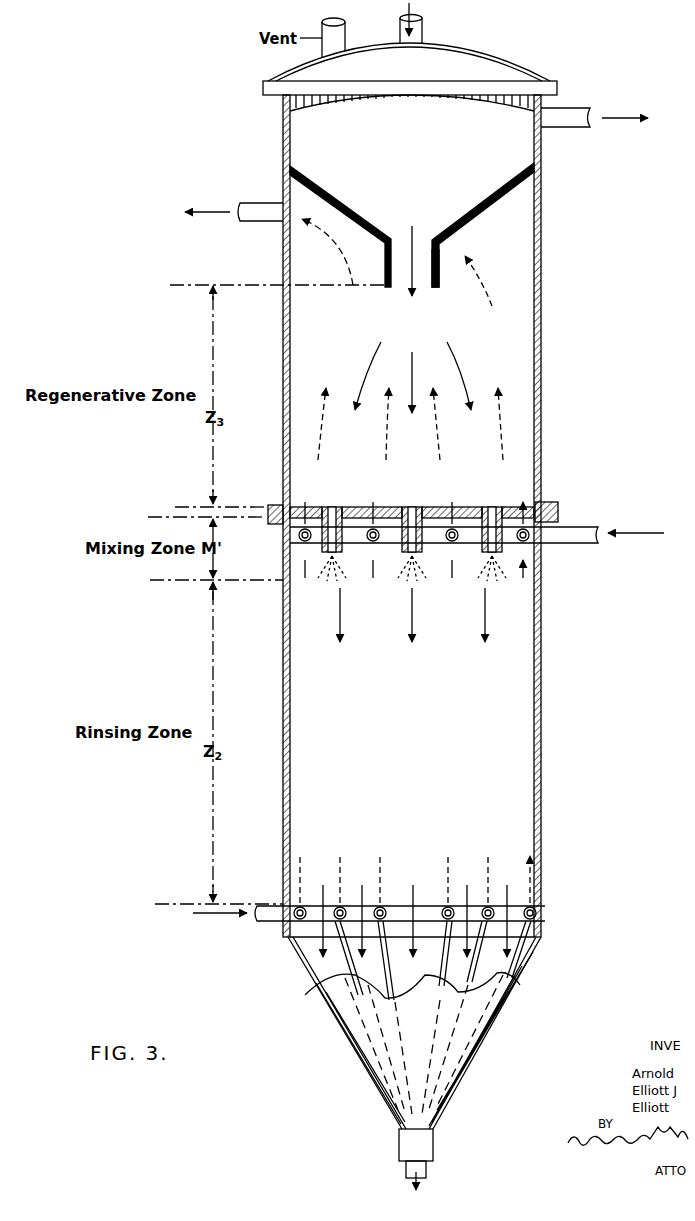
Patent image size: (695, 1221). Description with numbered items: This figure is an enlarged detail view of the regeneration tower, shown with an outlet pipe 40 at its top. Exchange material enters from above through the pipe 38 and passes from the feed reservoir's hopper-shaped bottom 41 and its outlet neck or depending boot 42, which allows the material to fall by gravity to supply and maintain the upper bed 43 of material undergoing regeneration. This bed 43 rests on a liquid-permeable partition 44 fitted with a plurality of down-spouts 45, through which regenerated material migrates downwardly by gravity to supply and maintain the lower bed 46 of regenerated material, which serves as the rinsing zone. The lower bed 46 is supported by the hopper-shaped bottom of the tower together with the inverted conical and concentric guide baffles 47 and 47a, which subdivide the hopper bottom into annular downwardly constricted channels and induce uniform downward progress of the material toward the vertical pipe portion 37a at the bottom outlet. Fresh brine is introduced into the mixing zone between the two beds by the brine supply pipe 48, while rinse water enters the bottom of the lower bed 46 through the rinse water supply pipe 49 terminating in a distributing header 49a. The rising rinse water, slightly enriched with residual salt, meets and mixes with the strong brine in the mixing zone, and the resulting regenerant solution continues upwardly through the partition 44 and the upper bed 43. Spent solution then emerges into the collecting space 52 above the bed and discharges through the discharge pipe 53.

The vertical portion of pipe 37a is at (430, 1166).
The pipe 38 is at (425, 33).
The outlet pipe 40 is at (565, 112).
The hopper-shaped bottom 41 is at (494, 203).
The outlet neck or depending boot 42 is at (440, 264).
The bed of exchange material for regeneration 43 is at (410, 394).
The liquid-permeable partition 44 is at (520, 512).
The down-spouts 45 is at (322, 550).
The bed of regenerated material 46 is at (415, 772).
The inverted conical guide baffles 47 is at (355, 972).
The inverted conical guide baffle 47a is at (424, 1044).
The brine supply pipe 48 is at (562, 543).
The rinse water supply pipe 49 is at (277, 922).
The distributing header 49a is at (425, 905).
The collecting space 52 is at (312, 250).
The discharge pipe 53 is at (270, 202).